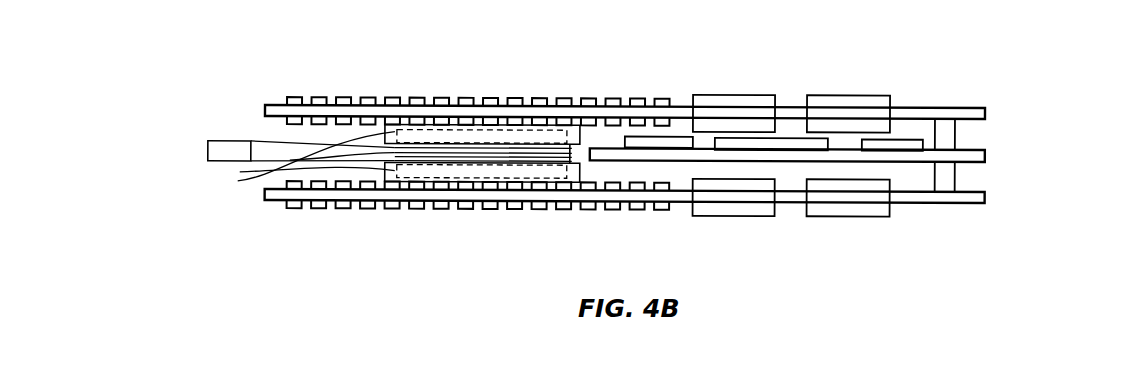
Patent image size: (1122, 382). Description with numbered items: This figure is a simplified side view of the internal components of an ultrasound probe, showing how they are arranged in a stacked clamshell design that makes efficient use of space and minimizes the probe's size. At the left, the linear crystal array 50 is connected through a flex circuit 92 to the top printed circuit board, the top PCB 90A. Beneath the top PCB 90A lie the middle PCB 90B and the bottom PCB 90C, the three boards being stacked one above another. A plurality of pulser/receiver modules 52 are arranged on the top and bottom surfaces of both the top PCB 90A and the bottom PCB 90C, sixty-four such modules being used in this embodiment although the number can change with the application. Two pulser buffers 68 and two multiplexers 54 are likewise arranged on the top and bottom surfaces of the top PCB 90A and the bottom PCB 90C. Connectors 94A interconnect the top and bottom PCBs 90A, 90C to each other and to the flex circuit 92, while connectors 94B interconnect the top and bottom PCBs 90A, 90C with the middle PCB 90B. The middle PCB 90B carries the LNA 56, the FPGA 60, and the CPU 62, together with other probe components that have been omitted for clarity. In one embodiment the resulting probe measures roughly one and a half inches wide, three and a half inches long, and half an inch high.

The linear crystal array 50 is at (223, 147).
The pulser/receiver modules 52 is at (443, 95).
The multiplexers 54 is at (847, 128).
The LNA 56 is at (680, 135).
The FPGA 60 is at (797, 136).
The CPU 62 is at (897, 142).
The pulser buffers 68 is at (738, 108).
The top PCB 90A is at (985, 110).
The middle PCB 90B is at (907, 156).
The bottom PCB 90C is at (985, 195).
The flex circuit 92 is at (268, 149).
The connectors 94A is at (240, 179).
The connectors 94B is at (984, 127).